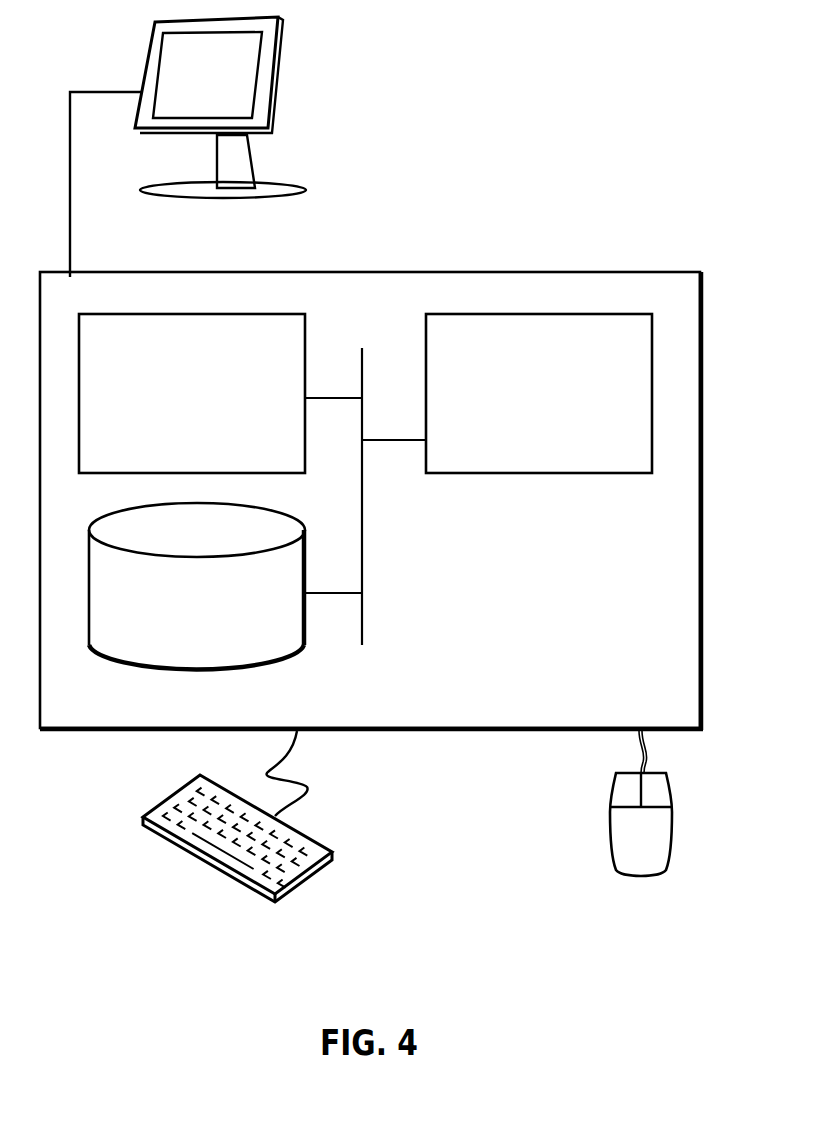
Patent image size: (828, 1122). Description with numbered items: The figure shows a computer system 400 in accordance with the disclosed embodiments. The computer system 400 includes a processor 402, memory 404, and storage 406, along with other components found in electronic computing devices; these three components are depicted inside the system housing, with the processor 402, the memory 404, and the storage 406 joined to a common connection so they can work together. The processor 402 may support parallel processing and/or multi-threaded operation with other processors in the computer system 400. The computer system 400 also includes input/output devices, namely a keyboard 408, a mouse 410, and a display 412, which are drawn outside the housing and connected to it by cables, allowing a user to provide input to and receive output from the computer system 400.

The computer system 400 is at (415, 250).
The processor 402 is at (521, 406).
The memory 404 is at (171, 406).
The storage 406 is at (179, 617).
The keyboard 408 is at (163, 837).
The mouse 410 is at (620, 846).
The display 412 is at (188, 147).